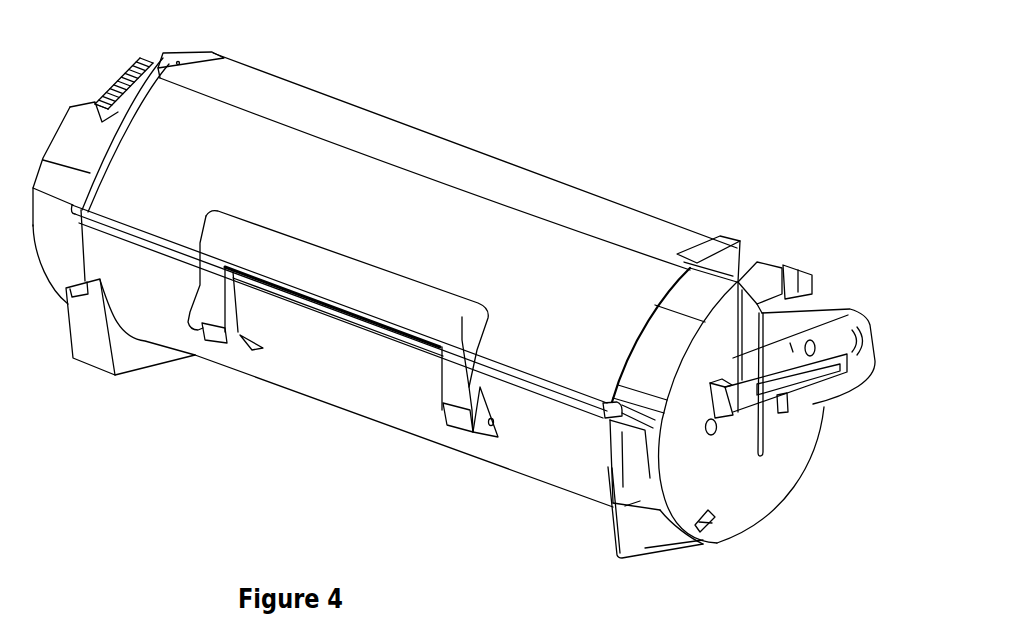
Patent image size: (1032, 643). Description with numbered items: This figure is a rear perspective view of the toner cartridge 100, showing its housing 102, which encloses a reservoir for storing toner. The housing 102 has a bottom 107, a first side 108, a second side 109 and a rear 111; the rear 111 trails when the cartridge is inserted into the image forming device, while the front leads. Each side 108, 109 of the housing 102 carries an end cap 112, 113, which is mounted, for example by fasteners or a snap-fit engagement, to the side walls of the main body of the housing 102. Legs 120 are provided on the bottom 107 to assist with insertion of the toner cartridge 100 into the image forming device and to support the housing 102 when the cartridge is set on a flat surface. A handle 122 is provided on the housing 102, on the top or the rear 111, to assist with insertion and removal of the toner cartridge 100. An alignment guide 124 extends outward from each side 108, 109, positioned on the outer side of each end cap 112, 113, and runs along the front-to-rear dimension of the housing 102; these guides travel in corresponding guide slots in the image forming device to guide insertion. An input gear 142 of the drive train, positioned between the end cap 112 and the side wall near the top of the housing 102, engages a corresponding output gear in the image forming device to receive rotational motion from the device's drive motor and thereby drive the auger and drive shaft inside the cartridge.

The toner cartridge 100 is at (522, 97).
The housing 102 is at (355, 135).
The bottom 107 is at (372, 423).
The first side 108 is at (63, 138).
The second side 109 is at (737, 503).
The rear 111 is at (310, 378).
The end cap 112 is at (56, 252).
The end cap 113 is at (810, 410).
The legs 120 is at (98, 370).
The handle 122 is at (330, 265).
The alignment guide 124 is at (783, 403).
The input gear 142 is at (130, 64).